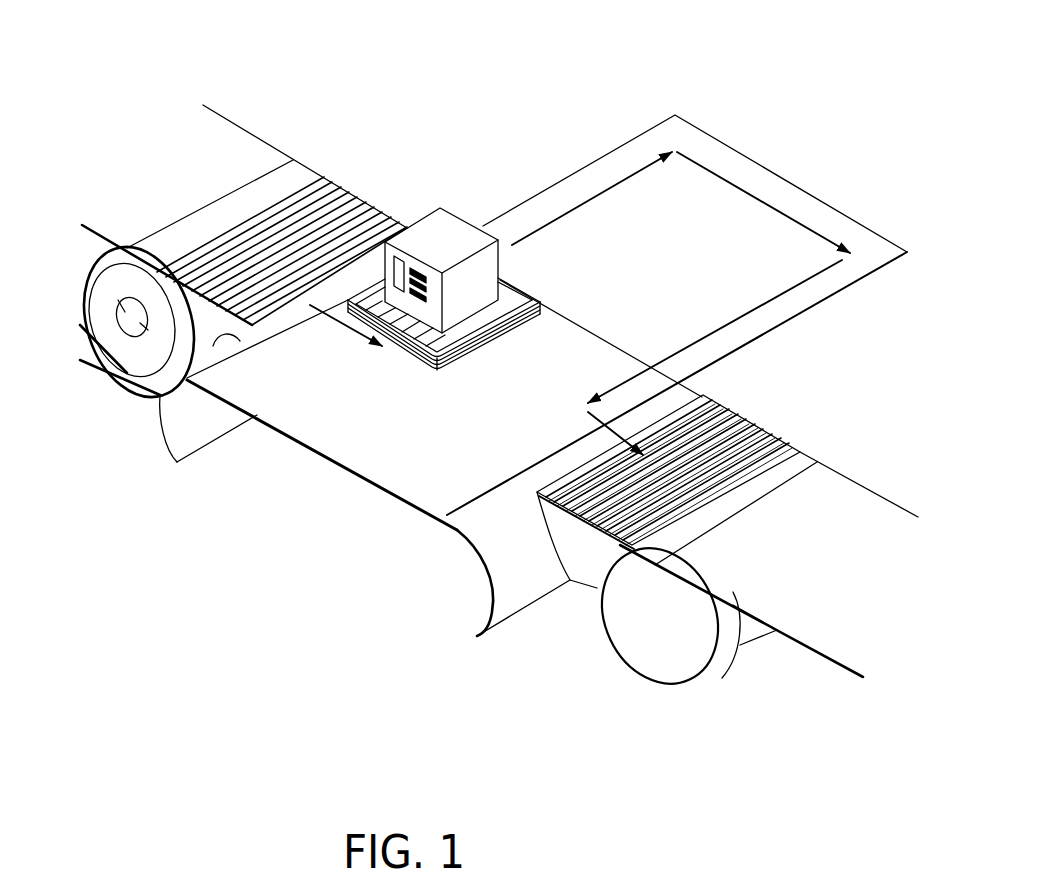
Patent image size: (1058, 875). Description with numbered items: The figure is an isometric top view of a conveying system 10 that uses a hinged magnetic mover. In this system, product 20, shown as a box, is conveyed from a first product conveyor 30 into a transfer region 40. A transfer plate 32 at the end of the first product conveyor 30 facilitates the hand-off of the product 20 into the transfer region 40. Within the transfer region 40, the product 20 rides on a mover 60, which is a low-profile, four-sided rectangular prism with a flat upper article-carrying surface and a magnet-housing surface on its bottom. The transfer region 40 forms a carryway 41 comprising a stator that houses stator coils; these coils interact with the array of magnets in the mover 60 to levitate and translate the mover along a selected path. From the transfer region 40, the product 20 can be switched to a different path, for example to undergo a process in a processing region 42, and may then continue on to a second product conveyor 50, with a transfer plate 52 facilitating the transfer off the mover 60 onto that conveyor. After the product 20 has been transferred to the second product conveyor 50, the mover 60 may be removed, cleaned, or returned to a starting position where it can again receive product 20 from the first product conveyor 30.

The conveying system 10 is at (421, 92).
The product 20 is at (447, 211).
The first product conveyor 30 is at (233, 142).
The transfer plate 32 is at (343, 188).
The transfer region 40 is at (282, 432).
The carryway 41 is at (516, 407).
The processing region 42 is at (773, 148).
The second product conveyor 50 is at (828, 478).
The transfer plate 52 is at (582, 520).
The mover 60 is at (441, 358).